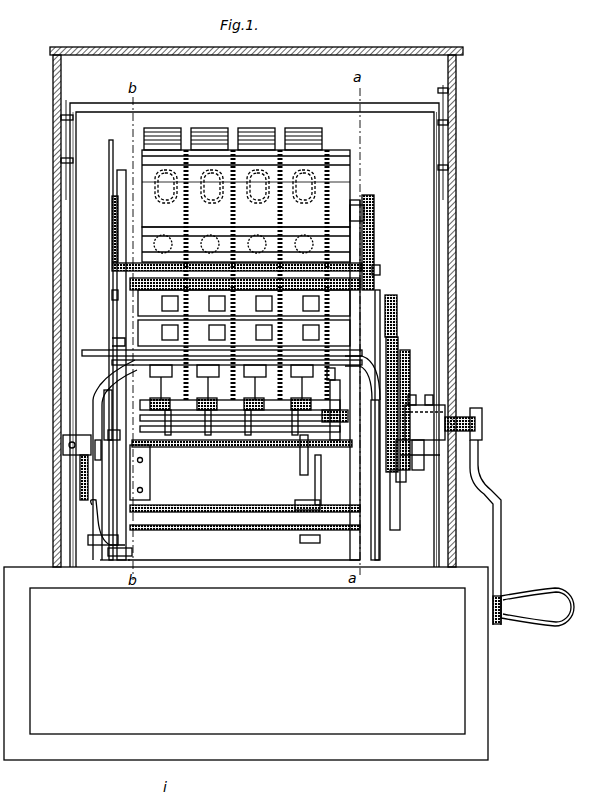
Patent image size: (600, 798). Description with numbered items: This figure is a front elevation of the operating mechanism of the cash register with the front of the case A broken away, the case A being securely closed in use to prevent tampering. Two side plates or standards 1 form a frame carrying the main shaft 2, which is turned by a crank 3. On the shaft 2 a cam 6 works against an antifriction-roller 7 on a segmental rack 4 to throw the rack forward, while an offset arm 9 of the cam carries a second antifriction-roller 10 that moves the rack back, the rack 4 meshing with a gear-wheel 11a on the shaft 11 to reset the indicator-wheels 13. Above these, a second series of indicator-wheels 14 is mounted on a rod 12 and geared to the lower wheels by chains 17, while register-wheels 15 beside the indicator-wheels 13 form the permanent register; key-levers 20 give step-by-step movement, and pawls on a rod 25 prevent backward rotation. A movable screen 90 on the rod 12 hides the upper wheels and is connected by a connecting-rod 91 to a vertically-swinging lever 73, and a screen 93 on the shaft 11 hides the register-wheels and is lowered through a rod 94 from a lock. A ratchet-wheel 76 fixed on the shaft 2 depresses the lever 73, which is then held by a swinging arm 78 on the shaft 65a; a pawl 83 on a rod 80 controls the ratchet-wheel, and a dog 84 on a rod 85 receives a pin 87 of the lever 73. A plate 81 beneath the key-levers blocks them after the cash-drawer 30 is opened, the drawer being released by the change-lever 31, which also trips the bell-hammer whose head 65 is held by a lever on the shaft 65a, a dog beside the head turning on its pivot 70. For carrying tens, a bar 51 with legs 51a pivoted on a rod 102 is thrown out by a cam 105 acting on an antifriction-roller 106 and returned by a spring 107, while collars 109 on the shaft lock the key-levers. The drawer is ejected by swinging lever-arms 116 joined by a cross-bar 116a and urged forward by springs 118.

The case A is at (54, 283).
The side plates or standards 1 is at (119, 250).
The main shaft 2 is at (458, 412).
The crank 3 is at (502, 535).
The segmental rack 4 is at (390, 403).
The cam 6 is at (404, 368).
The antifriction-roller 7 is at (401, 482).
The offset arm 9 is at (440, 455).
The antifriction-roller 10 is at (418, 470).
The shaft 11 is at (345, 326).
The gear-wheel 11a is at (393, 320).
The rod 12 is at (357, 205).
The indicator-wheels 13 is at (160, 352).
The second series of indicator-wheels 14 is at (216, 128).
The register-wheels 15 is at (160, 342).
The chains 17 is at (325, 260).
The key-levers 20 is at (208, 389).
The rod 25 is at (380, 270).
The cash-drawer 30 is at (246, 663).
The change-lever 31 is at (110, 460).
The bar 51 is at (396, 334).
The legs 51a is at (402, 532).
The head 65 is at (140, 500).
The shaft 65a is at (236, 447).
The pivot 70 is at (114, 470).
The vertically-swinging lever 73 is at (306, 548).
The ratchet-wheel 76 is at (320, 400).
The swinging arm 78 is at (304, 510).
The rod 80 is at (218, 448).
The plate 81 is at (240, 404).
The pawl 83 is at (338, 410).
The dog 84 is at (314, 490).
The rod 85 is at (245, 512).
The pin 87 is at (299, 464).
The movable screen 90 is at (146, 176).
The connecting-rod 91 is at (375, 237).
The screen 93 is at (112, 298).
The rod 94 is at (109, 186).
The rod or axis 102 is at (222, 531).
The cam 105 is at (80, 478).
The antifriction-roller 106 is at (90, 448).
The spring 107 is at (118, 556).
The collars 109 is at (207, 432).
The swinging lever-arms 116 is at (70, 224).
The cross-bar 116a is at (352, 110).
The springs 118 is at (61, 140).